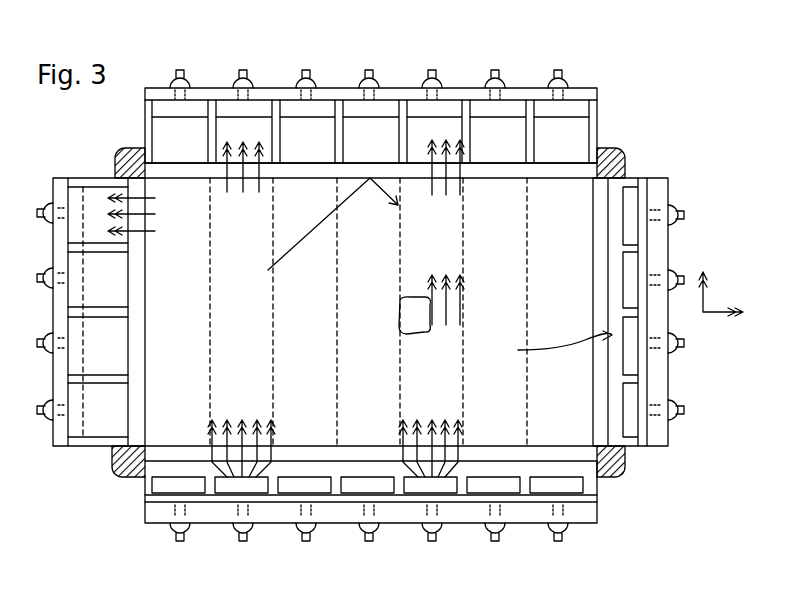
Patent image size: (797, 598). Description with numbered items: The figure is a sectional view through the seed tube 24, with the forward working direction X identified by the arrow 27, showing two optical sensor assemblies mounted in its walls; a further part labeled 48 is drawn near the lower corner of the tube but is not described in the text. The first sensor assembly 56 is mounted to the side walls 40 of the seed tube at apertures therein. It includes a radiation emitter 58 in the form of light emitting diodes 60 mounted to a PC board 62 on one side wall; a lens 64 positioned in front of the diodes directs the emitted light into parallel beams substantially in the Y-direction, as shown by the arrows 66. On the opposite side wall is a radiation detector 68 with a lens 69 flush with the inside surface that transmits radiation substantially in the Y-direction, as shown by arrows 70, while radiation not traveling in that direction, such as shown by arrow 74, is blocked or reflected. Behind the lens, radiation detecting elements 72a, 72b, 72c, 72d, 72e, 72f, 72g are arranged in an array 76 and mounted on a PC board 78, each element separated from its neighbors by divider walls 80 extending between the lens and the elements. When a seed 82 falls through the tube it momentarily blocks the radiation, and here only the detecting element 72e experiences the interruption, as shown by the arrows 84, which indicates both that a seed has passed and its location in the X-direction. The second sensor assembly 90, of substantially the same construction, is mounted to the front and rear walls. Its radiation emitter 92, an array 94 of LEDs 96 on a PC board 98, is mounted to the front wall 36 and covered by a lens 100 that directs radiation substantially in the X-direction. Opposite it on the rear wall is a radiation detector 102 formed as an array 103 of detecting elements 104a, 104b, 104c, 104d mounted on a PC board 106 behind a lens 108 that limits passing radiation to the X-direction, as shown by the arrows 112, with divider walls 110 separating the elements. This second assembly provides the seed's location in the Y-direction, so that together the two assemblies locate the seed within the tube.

The seed tube 24 is at (617, 478).
The arrow 27 is at (712, 314).
The front wall 36 is at (622, 455).
The side walls 40 is at (598, 150).
The bottom plate end 48 is at (603, 478).
The first sensor assembly 56 is at (480, 560).
The radiation emitter 58 is at (395, 523).
The light emitting diodes 60 is at (227, 488).
The PC board 62 is at (575, 515).
The lens 64 is at (172, 452).
The arrows 66 is at (272, 440).
The radiation detector 68 is at (609, 78).
The lens 69 is at (495, 180).
The arrows 70 is at (259, 193).
The radiation detecting element 72a is at (197, 106).
The radiation detecting element 72b is at (262, 106).
The radiation detecting element 72c is at (325, 106).
The radiation detecting element 72d is at (385, 106).
The radiation detecting element 72e is at (448, 106).
The radiation detecting element 72f is at (512, 106).
The radiation detecting element 72g is at (577, 106).
The arrow 74 is at (313, 232).
The array 76 is at (612, 100).
The PC board 78 is at (147, 88).
The divider walls 80 is at (283, 180).
The seed 82 is at (410, 318).
The arrows 84 is at (462, 440).
The second sensor assembly 90 is at (669, 478).
The radiation emitter 92 is at (663, 438).
The array 94 is at (552, 345).
The LEDs 96 is at (630, 405).
The PC board 98 is at (663, 190).
The lens 100 is at (602, 210).
The radiation detector 102 is at (86, 480).
The array 103 is at (62, 465).
The radiation detecting element 104a is at (73, 425).
The radiation detecting element 104b is at (62, 360).
The radiation detecting element 104c is at (72, 292).
The radiation detecting element 104d is at (67, 197).
The PC board 106 is at (53, 248).
The lens 108 is at (138, 277).
The divider walls 110 is at (110, 363).
The arrows 112 is at (150, 233).